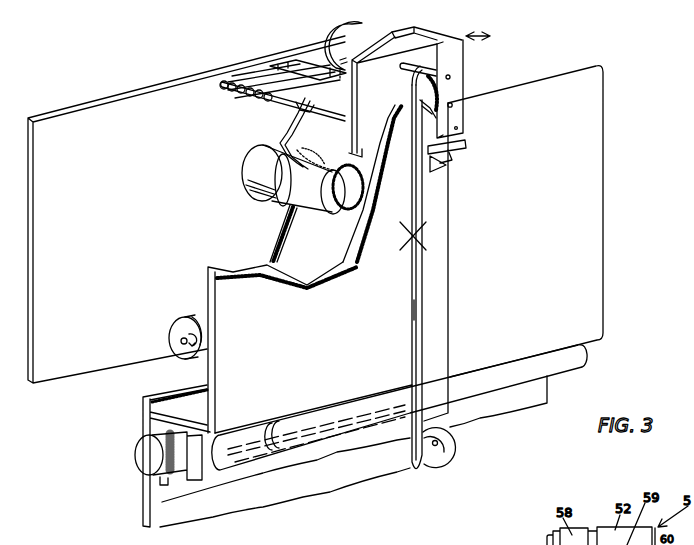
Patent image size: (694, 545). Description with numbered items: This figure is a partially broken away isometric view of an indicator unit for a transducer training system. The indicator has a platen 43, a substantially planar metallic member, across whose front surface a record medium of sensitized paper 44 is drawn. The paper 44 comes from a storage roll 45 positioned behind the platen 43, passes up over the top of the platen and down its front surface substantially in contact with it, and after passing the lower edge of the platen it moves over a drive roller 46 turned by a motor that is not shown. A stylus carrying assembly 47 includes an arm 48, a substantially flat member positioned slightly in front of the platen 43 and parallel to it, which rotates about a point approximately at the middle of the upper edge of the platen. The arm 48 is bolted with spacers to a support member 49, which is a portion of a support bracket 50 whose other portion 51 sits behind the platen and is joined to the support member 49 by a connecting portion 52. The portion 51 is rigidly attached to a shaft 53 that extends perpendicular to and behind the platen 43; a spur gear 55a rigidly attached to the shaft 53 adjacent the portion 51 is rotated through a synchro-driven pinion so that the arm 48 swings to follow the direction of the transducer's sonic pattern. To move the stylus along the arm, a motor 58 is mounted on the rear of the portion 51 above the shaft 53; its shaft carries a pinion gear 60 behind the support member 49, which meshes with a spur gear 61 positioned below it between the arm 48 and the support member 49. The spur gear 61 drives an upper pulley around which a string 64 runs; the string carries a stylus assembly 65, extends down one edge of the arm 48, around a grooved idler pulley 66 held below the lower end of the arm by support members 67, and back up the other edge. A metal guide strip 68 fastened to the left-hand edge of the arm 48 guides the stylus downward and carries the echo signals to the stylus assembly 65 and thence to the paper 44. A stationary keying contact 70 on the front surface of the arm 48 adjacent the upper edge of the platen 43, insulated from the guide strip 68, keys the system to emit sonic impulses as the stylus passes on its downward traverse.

The platen 43 is at (209, 368).
The sensitized paper 44 is at (311, 330).
The storage roll 45 is at (170, 333).
The drive roller 46 is at (350, 412).
The stylus carrying assembly 47 is at (470, 235).
The arm 48 is at (440, 345).
The support member 49 is at (458, 72).
The support bracket 50 is at (490, 35).
The support portion 51 is at (386, 87).
The connecting portion 52 is at (420, 50).
The shaft 53 is at (331, 119).
The spur gear 55a is at (342, 158).
The motor 58 is at (346, 38).
The pinion gear 60 is at (420, 72).
The spur gear 61 is at (428, 108).
The string 64 is at (417, 204).
The stylus assembly 65 is at (404, 240).
The idler pulley 66 is at (442, 458).
The support members 67 is at (444, 441).
The metal guide strip 68 is at (413, 306).
The keying contact 70 is at (466, 147).